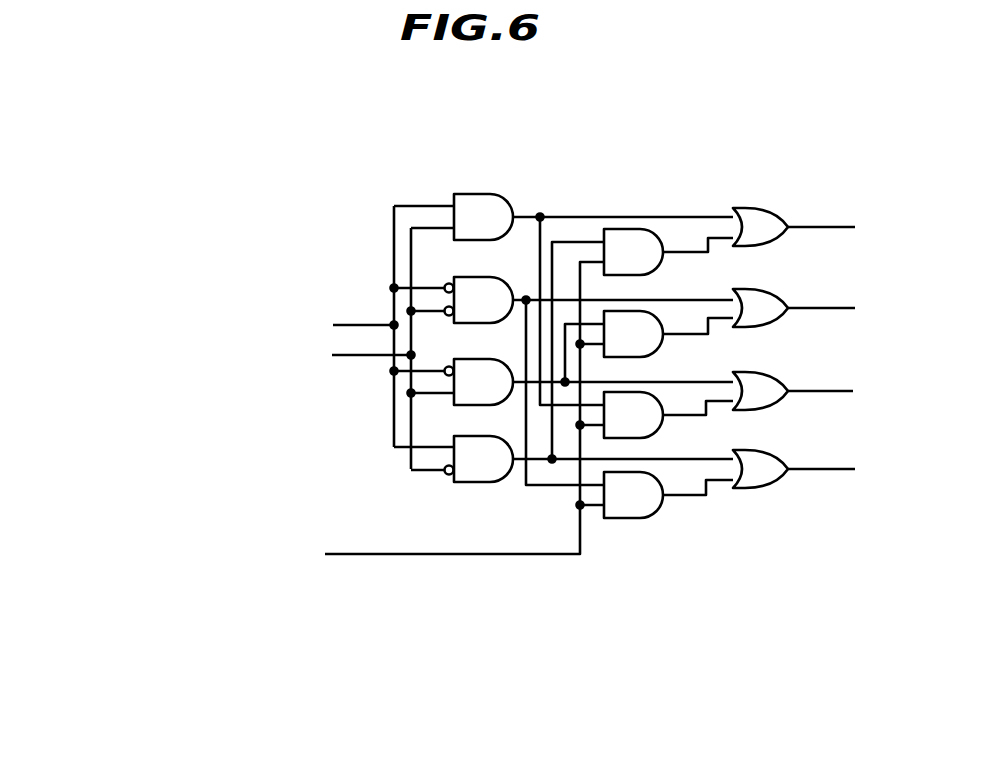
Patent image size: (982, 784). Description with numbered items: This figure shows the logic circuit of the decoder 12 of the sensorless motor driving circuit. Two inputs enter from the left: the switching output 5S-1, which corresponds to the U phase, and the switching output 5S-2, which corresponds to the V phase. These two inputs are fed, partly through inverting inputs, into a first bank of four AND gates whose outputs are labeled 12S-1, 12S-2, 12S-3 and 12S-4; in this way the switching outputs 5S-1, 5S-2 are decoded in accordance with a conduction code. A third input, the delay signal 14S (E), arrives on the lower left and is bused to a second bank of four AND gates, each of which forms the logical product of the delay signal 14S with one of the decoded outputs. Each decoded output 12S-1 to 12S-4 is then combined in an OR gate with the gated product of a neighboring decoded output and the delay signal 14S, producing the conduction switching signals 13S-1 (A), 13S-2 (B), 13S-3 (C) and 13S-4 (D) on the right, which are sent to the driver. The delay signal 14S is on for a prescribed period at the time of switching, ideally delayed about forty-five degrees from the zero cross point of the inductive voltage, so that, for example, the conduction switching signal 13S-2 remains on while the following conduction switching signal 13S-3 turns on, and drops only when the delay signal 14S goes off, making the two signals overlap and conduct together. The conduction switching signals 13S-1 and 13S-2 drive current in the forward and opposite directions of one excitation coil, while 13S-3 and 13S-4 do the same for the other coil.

The decoder 12 is at (412, 183).
The decoder output signal (AND gate 1) 12S-1 is at (521, 203).
The decoder output signal (AND gate 2) 12S-2 is at (517, 296).
The decoder output signal (AND gate 3) 12S-3 is at (516, 375).
The decoder output signal (AND gate 4) 12S-4 is at (513, 463).
The conduction switching signal 13S-1 is at (838, 226).
The conduction switching signal 13S-2 is at (828, 308).
The conduction switching signal 13S-3 is at (818, 391).
The conduction switching signal 13S-4 is at (826, 470).
The delay signal 14S is at (407, 557).
The switching output 5S-1 is at (210, 324).
The switching output 5S-2 is at (219, 354).